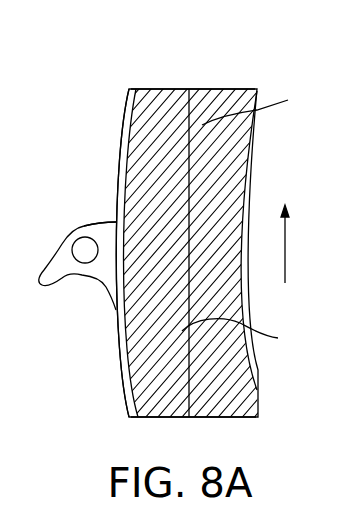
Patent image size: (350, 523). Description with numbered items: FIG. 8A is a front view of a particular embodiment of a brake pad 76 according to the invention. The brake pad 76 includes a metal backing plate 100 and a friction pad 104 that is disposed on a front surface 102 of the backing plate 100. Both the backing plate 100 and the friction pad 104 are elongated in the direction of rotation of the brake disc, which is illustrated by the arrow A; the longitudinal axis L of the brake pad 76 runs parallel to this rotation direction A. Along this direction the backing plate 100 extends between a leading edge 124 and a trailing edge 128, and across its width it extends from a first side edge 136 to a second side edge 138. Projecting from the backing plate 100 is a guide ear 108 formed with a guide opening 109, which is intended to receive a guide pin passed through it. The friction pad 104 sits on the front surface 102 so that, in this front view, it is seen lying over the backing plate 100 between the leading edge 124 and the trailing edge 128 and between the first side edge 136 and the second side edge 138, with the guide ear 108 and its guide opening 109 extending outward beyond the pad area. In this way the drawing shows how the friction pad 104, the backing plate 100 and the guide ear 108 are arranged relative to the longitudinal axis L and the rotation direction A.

The brake pad 76 is at (218, 77).
The trailing edge 128 is at (195, 88).
The leading edge 124 is at (203, 418).
The metal backing plate 100 is at (118, 137).
The second side edge 138 is at (115, 163).
The first side edge 136 is at (254, 158).
The guide ear 108 is at (79, 229).
The front surface 102 is at (105, 229).
The guide opening 109 is at (88, 262).
The friction pad 104 is at (247, 336).
The longitudinal axis L is at (251, 106).
The arrow indicating rotation direction A is at (295, 244).